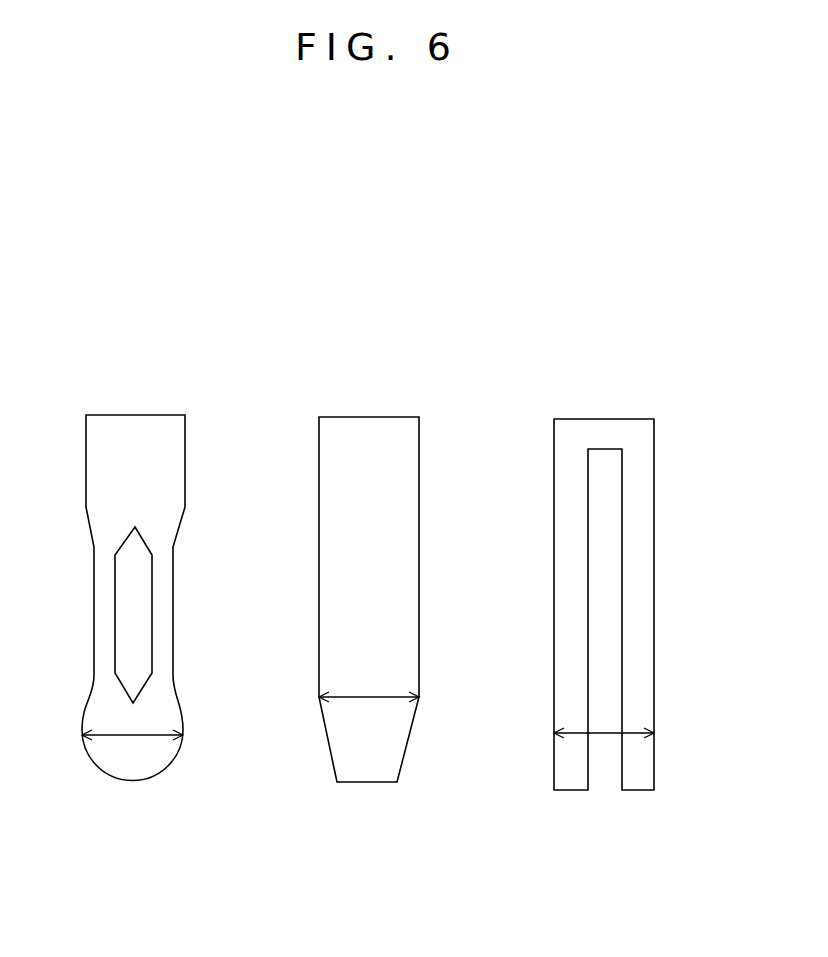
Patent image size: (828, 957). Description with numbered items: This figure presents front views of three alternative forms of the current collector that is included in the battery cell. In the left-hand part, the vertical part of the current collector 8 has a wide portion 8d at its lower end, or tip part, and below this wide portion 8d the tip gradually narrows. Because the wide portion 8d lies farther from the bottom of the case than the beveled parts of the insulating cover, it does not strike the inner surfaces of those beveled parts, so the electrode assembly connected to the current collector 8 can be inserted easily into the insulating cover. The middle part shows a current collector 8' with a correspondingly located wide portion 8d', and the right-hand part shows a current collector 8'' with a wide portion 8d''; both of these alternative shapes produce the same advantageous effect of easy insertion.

The current collector 8 is at (132, 548).
The current collector 8' is at (367, 549).
The current collector 8'' is at (600, 553).
The wide portion 8d is at (132, 791).
The wide portion 8d' is at (369, 768).
The wide portion 8d'' is at (604, 788).